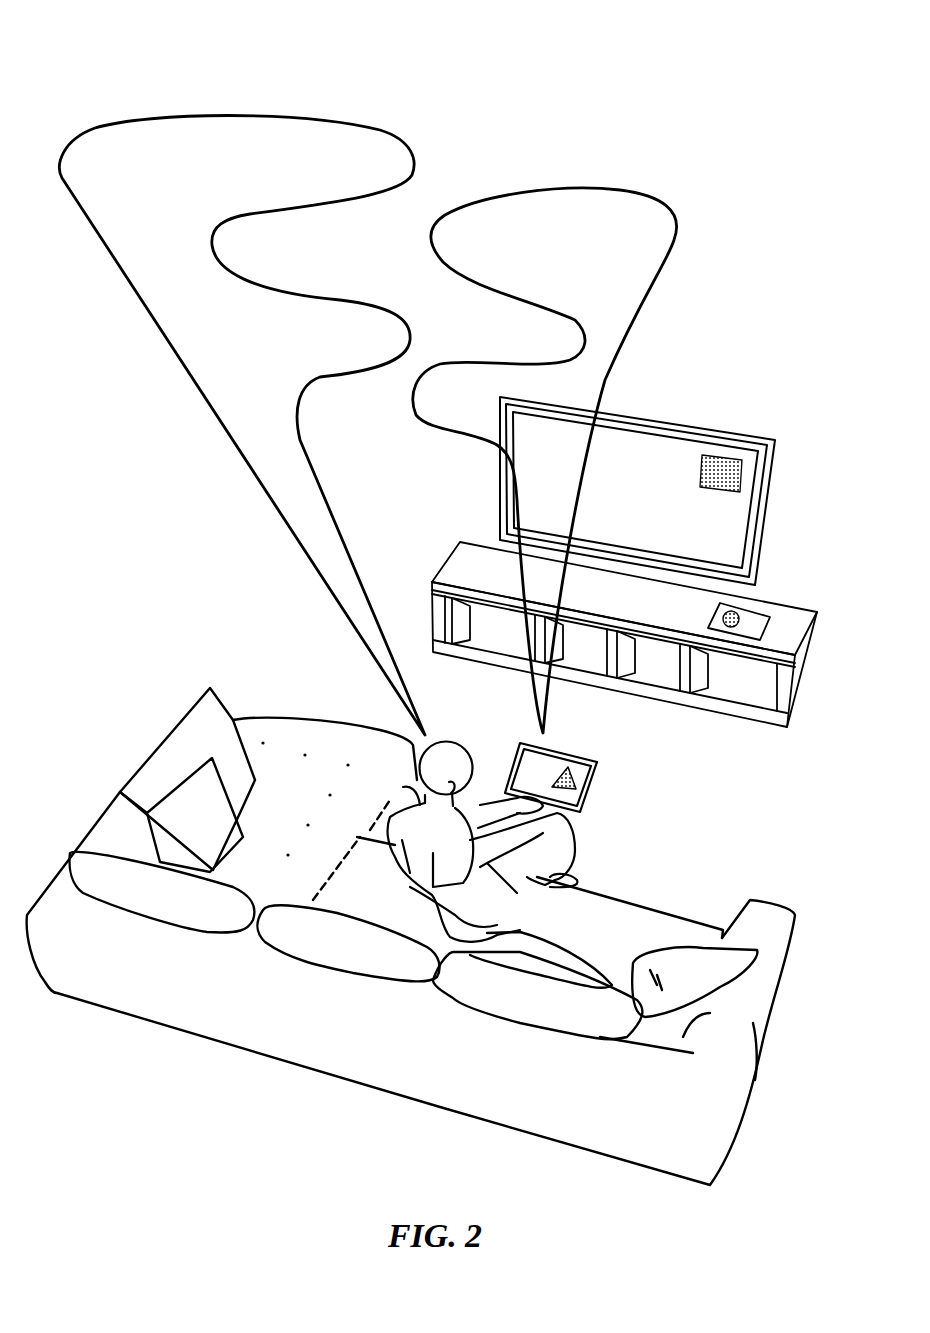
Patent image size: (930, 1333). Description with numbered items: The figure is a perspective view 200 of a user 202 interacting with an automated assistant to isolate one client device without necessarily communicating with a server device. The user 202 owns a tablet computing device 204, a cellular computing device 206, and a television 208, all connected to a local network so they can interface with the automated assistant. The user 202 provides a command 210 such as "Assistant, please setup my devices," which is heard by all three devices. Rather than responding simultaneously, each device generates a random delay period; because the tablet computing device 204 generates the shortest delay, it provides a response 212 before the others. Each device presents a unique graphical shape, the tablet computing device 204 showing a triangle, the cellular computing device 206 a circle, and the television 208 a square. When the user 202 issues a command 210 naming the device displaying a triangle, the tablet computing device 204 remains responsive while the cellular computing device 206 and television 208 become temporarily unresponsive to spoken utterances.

The perspective view 200 is at (160, 72).
The user 202 is at (483, 842).
The tablet computing device 204 is at (590, 781).
The cellular computing device 206 is at (765, 604).
The television 208 is at (637, 491).
The command 210 is at (362, 126).
The response 212 is at (624, 188).